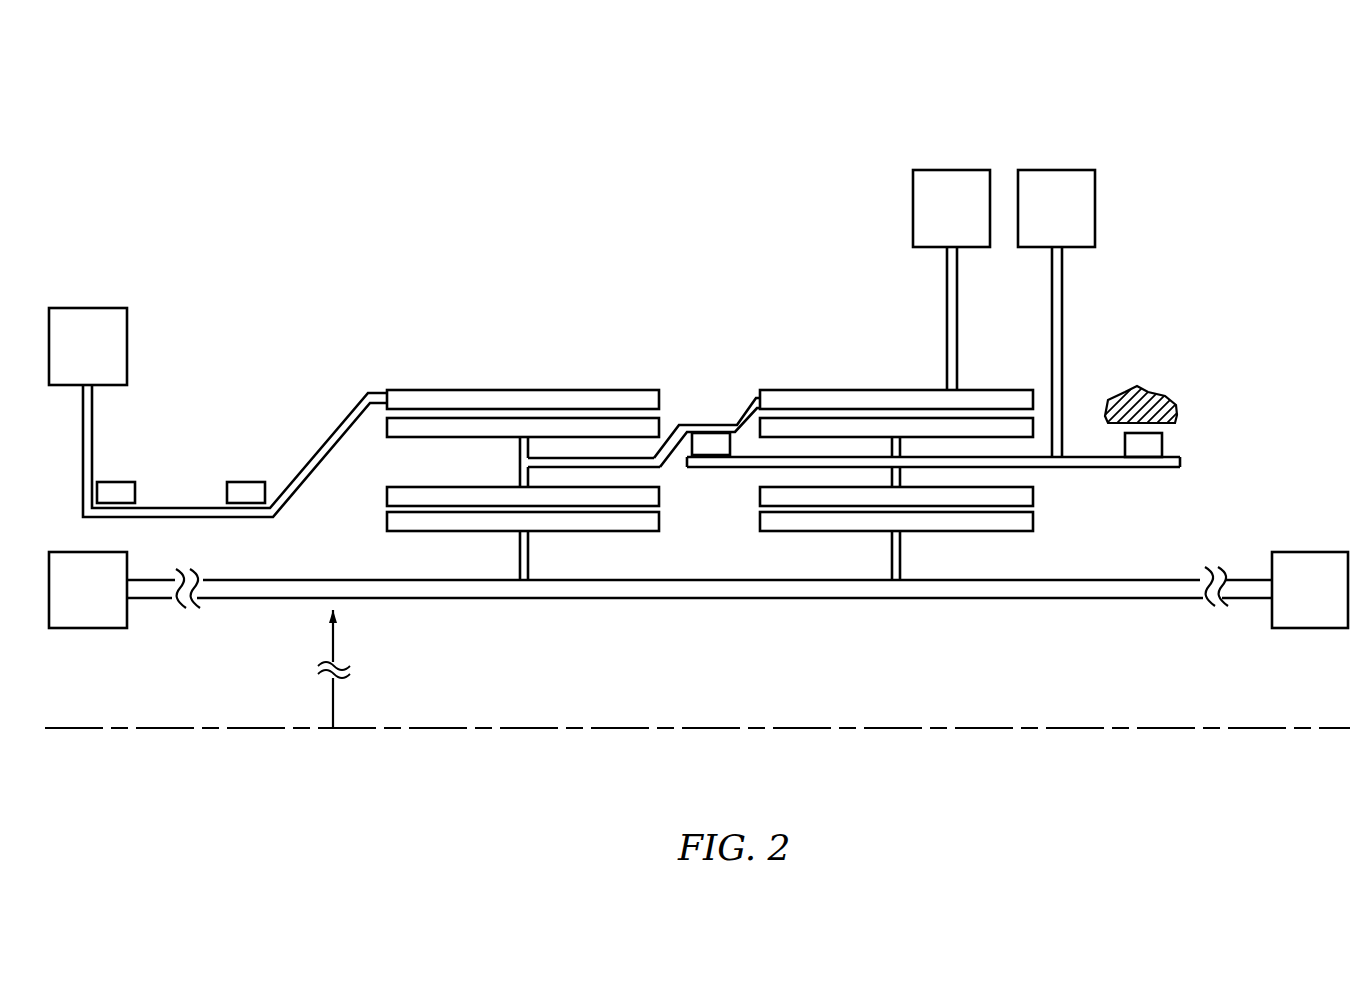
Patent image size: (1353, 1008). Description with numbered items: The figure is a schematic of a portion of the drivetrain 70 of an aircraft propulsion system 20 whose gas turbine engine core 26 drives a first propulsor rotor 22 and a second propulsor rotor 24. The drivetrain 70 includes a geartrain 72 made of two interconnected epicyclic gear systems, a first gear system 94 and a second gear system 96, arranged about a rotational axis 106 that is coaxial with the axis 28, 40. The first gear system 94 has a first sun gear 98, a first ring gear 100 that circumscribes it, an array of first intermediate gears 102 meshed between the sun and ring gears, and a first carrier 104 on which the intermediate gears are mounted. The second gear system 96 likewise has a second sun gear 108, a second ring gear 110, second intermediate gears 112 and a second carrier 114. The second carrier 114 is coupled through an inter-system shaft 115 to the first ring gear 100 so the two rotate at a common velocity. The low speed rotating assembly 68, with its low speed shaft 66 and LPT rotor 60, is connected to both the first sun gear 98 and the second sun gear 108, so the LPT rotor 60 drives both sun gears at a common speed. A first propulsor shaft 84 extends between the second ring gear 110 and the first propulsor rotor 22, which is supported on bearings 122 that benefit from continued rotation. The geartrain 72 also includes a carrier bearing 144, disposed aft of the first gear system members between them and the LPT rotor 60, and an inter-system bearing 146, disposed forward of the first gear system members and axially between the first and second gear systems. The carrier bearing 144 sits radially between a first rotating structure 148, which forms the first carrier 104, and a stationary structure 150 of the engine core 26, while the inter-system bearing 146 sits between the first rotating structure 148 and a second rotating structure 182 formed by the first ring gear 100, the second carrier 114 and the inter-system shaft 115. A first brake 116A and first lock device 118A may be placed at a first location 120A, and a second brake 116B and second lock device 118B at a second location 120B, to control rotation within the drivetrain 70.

The aircraft propulsion system 20 is at (697, 442).
The core 26 is at (265, 134).
The first propulsor rotor 22 is at (102, 361).
The second propulsor rotor 24 is at (102, 606).
The LPT rotor 60 is at (1324, 605).
The low speed shaft 66 is at (1105, 598).
The low speed rotating assembly 68 is at (1245, 558).
The drivetrain 70 is at (525, 645).
The axis 28 is at (697, 775).
The axis 40 is at (697, 775).
The rotational axis 106 is at (157, 728).
The first propulsor shaft 84 is at (200, 517).
The bearings 122 is at (235, 482).
The second gear system 96 is at (502, 428).
The second ring gear 110 is at (442, 390).
The second intermediate gears 112 is at (470, 437).
The second sun gear 108 is at (450, 531).
The second carrier 114 is at (617, 467).
The first gear system 94 is at (869, 425).
The first ring gear 100 is at (893, 390).
The first intermediate gears 102 is at (792, 437).
The first sun gear 98 is at (853, 531).
The first carrier 104 is at (960, 467).
The geartrain 72 is at (704, 340).
The second rotating structure 182 is at (704, 392).
The inter-system shaft 115 is at (720, 422).
The inter-system bearing 146 is at (686, 447).
The first rotating structure 148 is at (1098, 472).
The carrier bearing 144 is at (1175, 447).
The stationary structure 150 is at (1160, 390).
The first brake 116A is at (1066, 271).
The first lock device 118A is at (1066, 271).
The first location 120A is at (1078, 170).
The second brake 116B is at (886, 258).
The second lock device 118B is at (886, 258).
The second location 120B is at (912, 200).